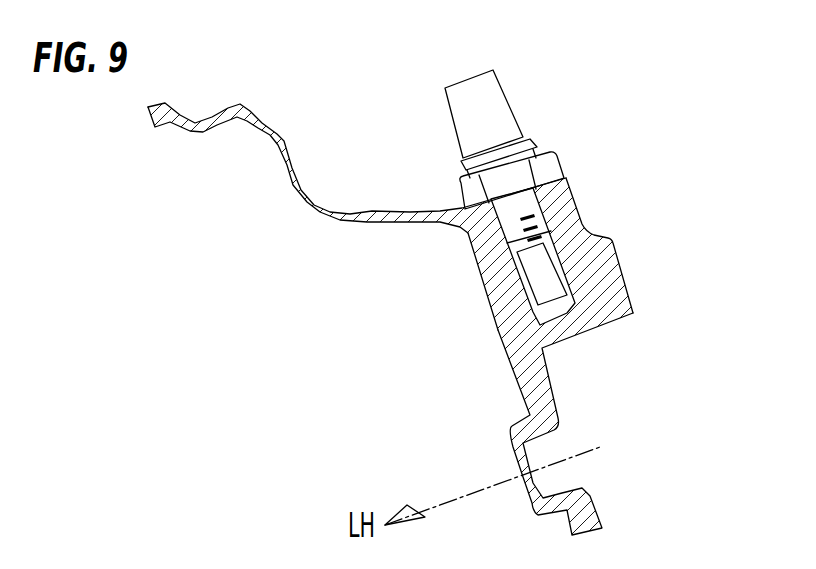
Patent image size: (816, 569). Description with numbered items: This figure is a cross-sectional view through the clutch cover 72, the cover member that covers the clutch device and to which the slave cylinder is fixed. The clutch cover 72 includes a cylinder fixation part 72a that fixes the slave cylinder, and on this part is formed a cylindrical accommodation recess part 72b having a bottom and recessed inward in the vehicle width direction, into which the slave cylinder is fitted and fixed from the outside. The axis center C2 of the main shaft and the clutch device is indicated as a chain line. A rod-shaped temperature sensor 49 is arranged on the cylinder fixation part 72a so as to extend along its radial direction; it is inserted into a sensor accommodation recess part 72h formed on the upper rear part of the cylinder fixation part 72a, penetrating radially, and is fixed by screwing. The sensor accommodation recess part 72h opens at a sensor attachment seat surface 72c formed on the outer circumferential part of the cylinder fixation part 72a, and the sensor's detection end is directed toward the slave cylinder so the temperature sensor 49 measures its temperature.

The clutch cover 72 is at (408, 284).
The cylinder fixation part 72a is at (625, 278).
The accommodation recess part 72b is at (583, 330).
The sensor attachment seat surface 72c is at (478, 207).
The sensor accommodation recess part 72h is at (553, 254).
The temperature sensor 49 is at (500, 118).
The axis center of the main shaft and the clutch device C2 is at (584, 452).